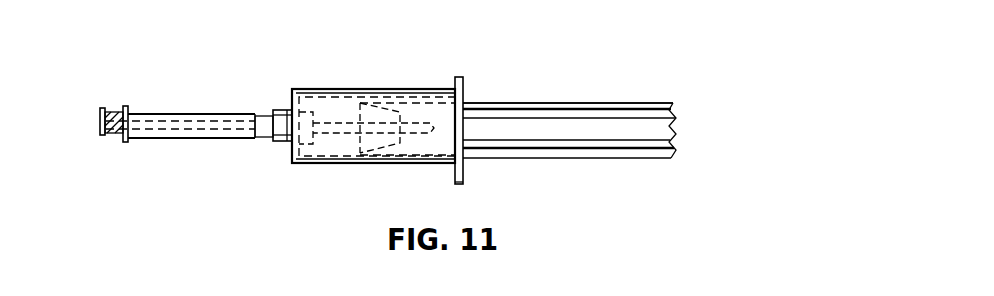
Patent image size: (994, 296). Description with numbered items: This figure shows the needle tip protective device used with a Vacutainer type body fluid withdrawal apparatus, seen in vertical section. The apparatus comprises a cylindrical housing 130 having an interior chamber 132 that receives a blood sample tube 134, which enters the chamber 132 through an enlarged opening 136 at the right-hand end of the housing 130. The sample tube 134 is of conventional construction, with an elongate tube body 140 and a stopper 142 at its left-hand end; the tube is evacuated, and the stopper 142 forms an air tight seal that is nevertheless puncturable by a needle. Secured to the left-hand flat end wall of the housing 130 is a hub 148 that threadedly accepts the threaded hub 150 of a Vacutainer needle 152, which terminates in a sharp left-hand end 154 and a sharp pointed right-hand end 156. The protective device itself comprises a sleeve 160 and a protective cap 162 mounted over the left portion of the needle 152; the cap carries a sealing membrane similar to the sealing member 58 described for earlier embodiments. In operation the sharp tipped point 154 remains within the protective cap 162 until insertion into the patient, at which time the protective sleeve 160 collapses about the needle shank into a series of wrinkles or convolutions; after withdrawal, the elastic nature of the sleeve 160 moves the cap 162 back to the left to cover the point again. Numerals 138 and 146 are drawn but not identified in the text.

The sealing member 58 is at (118, 135).
The cylindrical housing 130 is at (322, 164).
The interior chamber 132 is at (334, 107).
The blood sample tube 134 is at (583, 160).
The enlarged opening 136 is at (458, 86).
The flange edge 138 is at (462, 182).
The tube body 140 is at (586, 103).
The stopper 142 is at (377, 117).
The barrel end wall 146 is at (292, 102).
The hub 148 is at (306, 116).
The threaded hub 150 is at (279, 144).
The Vacutainer needle 152 is at (166, 120).
The sharp left-hand end 154 is at (110, 112).
The sharp pointed right-hand end 156 is at (428, 135).
The sleeve 160 is at (199, 138).
The protective cap 162 is at (119, 110).